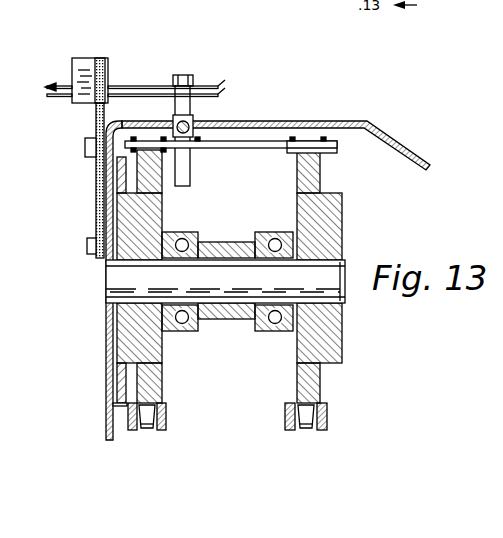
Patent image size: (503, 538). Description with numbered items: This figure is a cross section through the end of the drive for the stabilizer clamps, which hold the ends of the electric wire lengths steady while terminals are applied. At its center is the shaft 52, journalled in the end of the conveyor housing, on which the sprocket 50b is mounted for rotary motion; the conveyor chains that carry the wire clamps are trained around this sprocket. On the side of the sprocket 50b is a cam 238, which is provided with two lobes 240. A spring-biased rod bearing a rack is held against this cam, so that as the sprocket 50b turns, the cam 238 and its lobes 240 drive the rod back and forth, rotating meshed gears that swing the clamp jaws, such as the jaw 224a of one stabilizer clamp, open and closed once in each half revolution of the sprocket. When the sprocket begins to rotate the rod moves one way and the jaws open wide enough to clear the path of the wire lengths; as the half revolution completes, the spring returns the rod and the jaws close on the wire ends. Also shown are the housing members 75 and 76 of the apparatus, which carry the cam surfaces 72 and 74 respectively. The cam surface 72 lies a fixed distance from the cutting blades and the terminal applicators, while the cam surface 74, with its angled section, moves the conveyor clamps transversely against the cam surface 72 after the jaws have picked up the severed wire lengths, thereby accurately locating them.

The jaw 224a is at (92, 60).
The housing member 75 is at (119, 122).
The cam surface 72 is at (178, 121).
The cam surface 74 is at (197, 114).
The housing member 76 is at (304, 122).
The sprocket 50b is at (318, 218).
The shaft 52 is at (262, 278).
The cam 238 is at (116, 360).
The lobe 240 is at (112, 409).